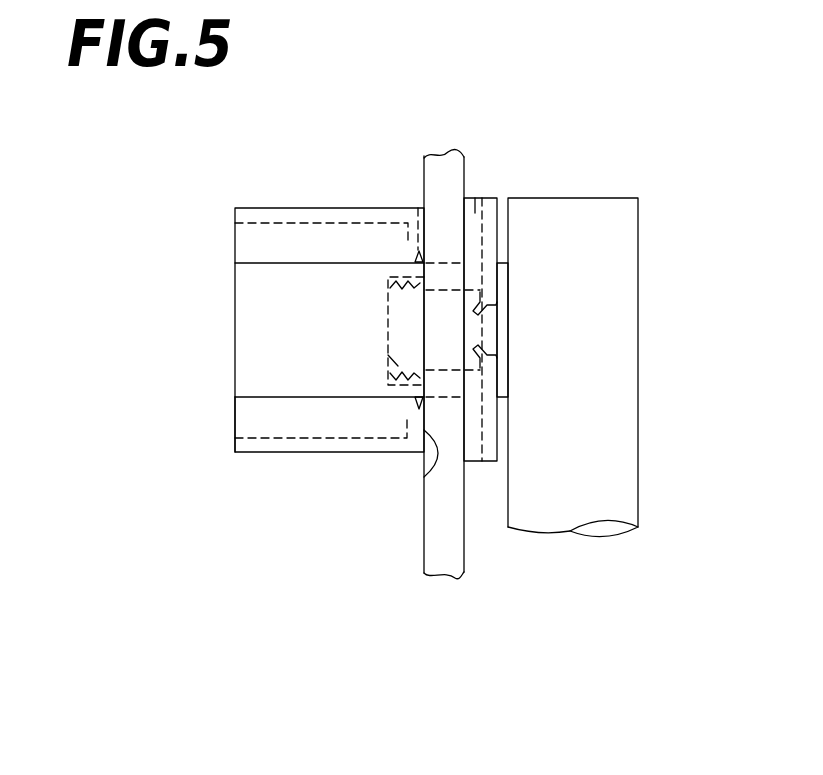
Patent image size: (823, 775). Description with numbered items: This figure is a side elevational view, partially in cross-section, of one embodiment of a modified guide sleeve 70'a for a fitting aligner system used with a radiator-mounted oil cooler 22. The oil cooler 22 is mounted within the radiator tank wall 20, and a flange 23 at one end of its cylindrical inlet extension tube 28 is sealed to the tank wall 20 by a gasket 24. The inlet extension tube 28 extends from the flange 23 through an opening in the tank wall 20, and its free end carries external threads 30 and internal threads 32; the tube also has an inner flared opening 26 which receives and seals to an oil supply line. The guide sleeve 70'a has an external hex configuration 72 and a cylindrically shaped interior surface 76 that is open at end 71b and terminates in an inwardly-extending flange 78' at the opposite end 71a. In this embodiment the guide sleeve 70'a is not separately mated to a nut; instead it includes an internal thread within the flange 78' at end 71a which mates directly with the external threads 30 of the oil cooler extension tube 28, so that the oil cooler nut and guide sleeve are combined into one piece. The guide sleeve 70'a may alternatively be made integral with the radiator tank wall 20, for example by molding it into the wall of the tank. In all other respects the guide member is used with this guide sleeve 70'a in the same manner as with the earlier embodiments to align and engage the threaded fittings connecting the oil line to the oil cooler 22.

The radiator tank wall 20 is at (433, 563).
The oil cooler 22 is at (582, 212).
The flange 23 is at (492, 438).
The gasket 24 is at (483, 198).
The inner flared opening 26 is at (500, 335).
The inlet extension tube 28 is at (441, 270).
The external threads 30 is at (412, 208).
The internal threads 32 is at (388, 355).
The guide sleeve 70'a is at (314, 103).
The end 71a is at (423, 477).
The end 71b is at (235, 417).
The external hex configuration 72 is at (245, 250).
The cylindrically shaped interior surface 76 is at (313, 223).
The flange 78' is at (324, 329).